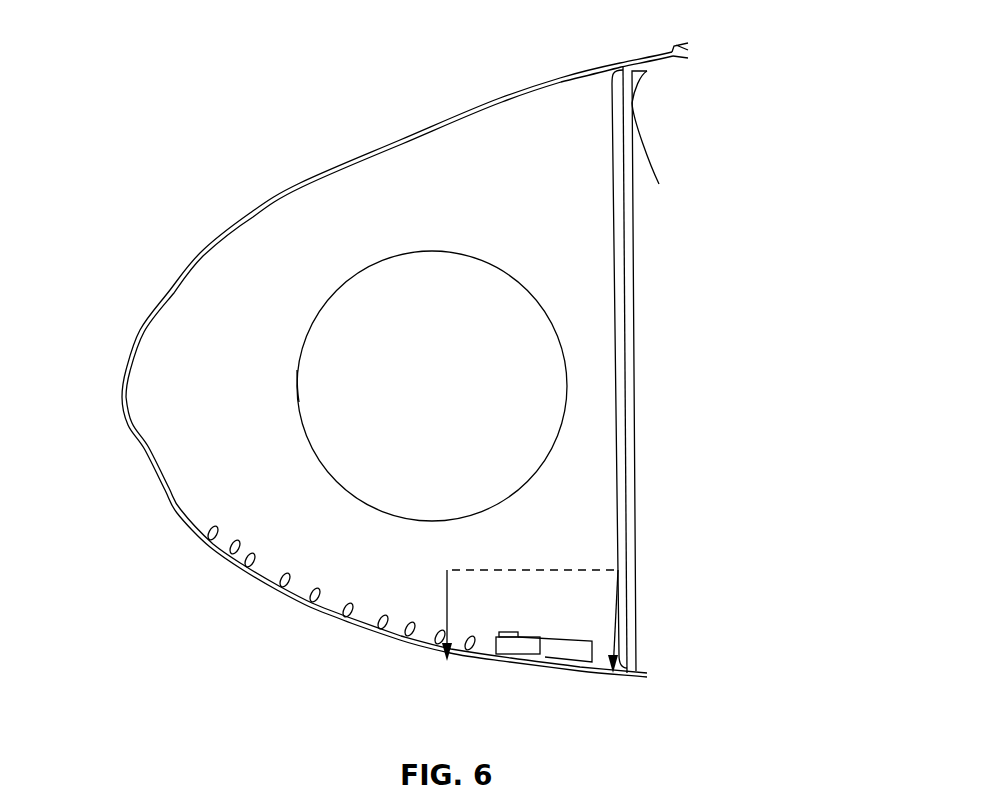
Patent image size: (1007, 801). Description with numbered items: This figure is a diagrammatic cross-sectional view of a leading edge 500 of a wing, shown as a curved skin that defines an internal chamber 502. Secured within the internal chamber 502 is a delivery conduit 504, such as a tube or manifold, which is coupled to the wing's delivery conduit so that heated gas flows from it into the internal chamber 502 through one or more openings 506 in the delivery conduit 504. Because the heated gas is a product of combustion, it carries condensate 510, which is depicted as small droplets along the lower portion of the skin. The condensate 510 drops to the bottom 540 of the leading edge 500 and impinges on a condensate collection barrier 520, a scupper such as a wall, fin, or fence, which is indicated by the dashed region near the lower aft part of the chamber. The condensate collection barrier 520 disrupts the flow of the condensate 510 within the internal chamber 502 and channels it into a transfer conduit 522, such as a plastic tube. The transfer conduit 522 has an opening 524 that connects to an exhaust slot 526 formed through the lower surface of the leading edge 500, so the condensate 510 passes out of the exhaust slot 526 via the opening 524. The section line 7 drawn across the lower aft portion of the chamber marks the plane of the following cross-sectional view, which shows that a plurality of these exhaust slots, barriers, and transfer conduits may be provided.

The leading edge 500 is at (258, 158).
The internal chamber 502 is at (515, 148).
The delivery conduit 504 is at (452, 254).
The openings 506 is at (298, 380).
The condensate 510 is at (235, 557).
The condensate collection barrier 520 is at (510, 635).
The transfer conduit 522 is at (517, 634).
The opening 524 is at (518, 657).
The exhaust slot 526 is at (560, 665).
The bottom 540 is at (326, 614).
The line 7- 7 is at (533, 639).